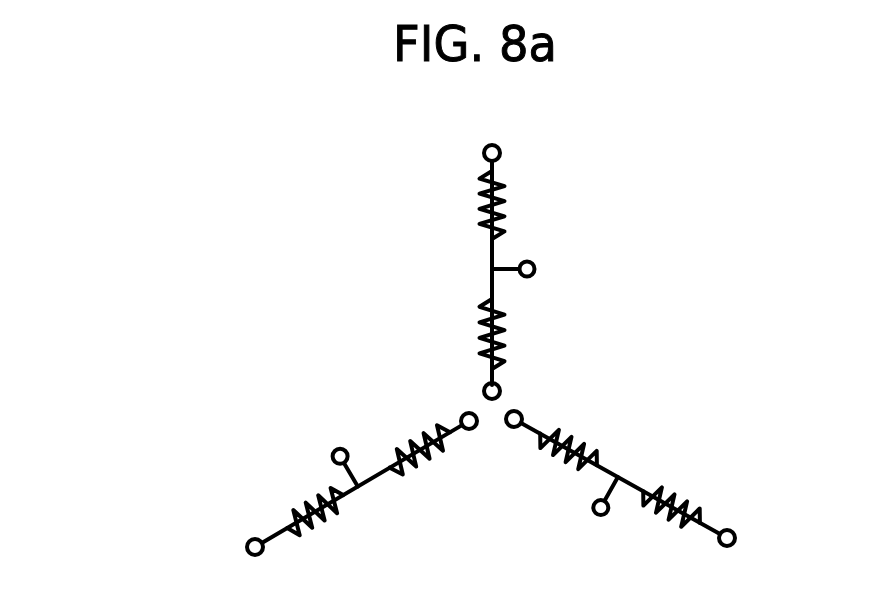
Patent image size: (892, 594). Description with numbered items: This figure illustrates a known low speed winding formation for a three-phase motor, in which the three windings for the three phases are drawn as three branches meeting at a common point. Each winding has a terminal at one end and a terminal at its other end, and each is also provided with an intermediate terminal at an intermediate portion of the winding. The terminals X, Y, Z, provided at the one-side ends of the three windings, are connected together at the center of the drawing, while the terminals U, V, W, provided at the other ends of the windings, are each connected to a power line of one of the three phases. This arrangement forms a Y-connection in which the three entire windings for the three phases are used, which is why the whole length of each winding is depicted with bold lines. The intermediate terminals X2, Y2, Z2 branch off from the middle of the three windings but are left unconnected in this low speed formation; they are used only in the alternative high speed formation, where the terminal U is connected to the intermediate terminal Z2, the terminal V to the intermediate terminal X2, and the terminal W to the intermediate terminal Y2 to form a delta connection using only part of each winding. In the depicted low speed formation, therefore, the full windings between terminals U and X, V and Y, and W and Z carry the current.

The terminal U is at (492, 243).
The terminal X is at (480, 391).
The intermediate terminal X2 is at (536, 274).
The terminal Y is at (369, 478).
The intermediate terminal Y2 is at (336, 450).
The terminal V is at (241, 561).
The terminal Z is at (612, 472).
The intermediate terminal Z2 is at (591, 517).
The terminal W is at (738, 555).